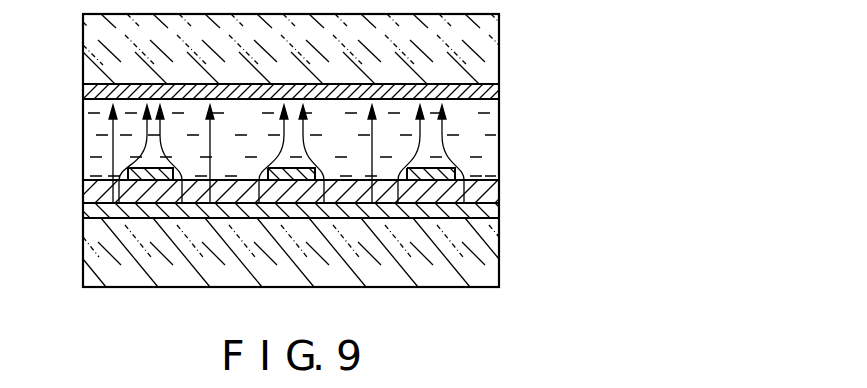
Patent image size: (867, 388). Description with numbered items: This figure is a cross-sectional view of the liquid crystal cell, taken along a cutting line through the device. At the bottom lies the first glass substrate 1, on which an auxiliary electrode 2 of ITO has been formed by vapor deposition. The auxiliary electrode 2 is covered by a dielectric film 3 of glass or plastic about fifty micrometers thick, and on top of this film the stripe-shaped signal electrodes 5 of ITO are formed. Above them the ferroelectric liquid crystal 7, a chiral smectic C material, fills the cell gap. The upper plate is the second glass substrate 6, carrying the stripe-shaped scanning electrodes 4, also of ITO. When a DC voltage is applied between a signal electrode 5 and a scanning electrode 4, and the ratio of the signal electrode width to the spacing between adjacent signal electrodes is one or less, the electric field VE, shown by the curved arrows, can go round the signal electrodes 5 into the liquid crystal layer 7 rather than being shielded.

The first glass substrate 1 is at (490, 262).
The auxiliary electrode 2 is at (488, 210).
The dielectric film 3 is at (490, 198).
The scanning electrodes 4 is at (500, 92).
The signal electrodes 5 is at (458, 170).
The second glass substrate 6 is at (497, 52).
The ferroelectric liquid crystal 7 is at (490, 145).
The electric field VE is at (112, 143).